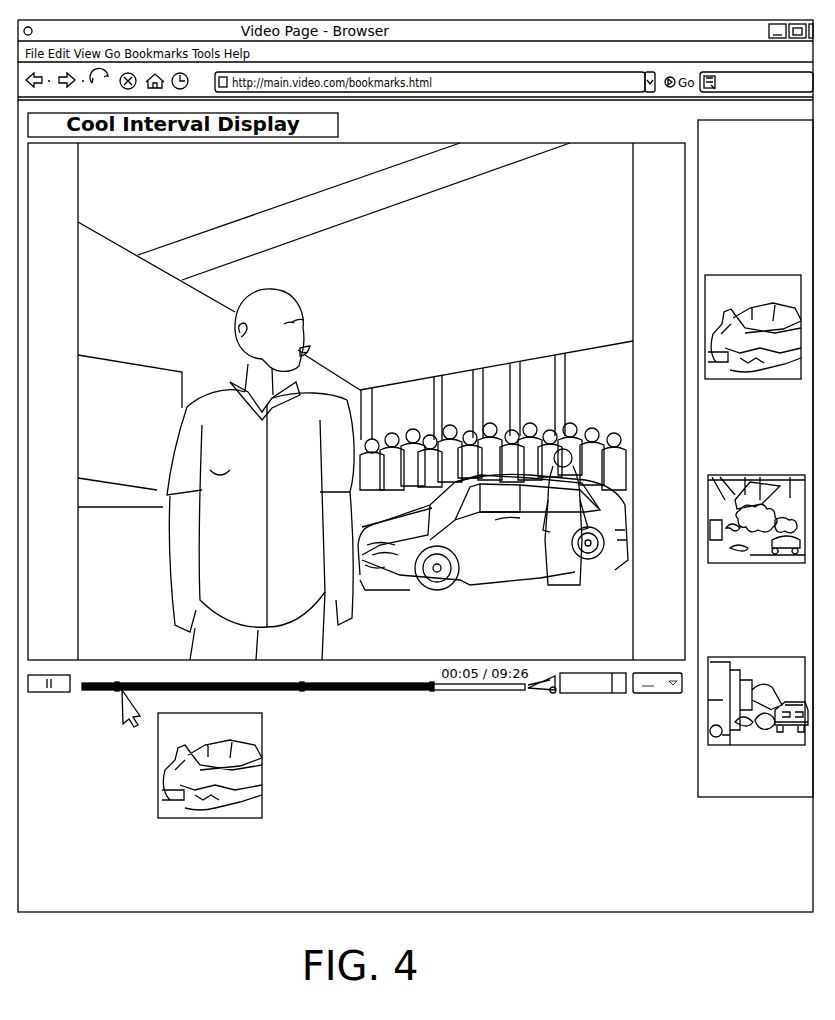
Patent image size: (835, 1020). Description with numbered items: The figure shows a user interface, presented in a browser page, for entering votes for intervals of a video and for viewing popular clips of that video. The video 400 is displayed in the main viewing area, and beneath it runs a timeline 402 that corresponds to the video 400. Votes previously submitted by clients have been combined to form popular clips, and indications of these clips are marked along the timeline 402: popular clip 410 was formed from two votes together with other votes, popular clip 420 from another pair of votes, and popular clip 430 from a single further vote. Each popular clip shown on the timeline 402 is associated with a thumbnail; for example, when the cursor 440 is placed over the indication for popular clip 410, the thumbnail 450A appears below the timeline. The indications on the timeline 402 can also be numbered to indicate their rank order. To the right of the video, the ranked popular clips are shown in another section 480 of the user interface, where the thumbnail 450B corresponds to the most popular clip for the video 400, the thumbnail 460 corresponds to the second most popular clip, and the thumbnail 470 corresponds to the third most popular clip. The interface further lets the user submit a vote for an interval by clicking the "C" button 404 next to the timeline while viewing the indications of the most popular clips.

The video 400 is at (528, 143).
The timeline 402 is at (497, 692).
The "C" button 404 is at (590, 694).
The popular clip 410 is at (117, 692).
The popular clip 420 is at (302, 692).
The popular clip 430 is at (432, 692).
The cursor 440 is at (136, 724).
The thumbnail 450A is at (220, 820).
The thumbnail 450B is at (753, 273).
The thumbnail 460 is at (749, 473).
The thumbnail 470 is at (761, 655).
The section of the user interface 480 is at (725, 455).